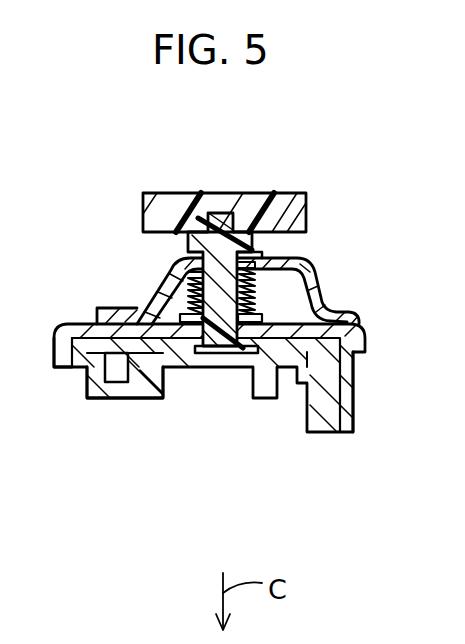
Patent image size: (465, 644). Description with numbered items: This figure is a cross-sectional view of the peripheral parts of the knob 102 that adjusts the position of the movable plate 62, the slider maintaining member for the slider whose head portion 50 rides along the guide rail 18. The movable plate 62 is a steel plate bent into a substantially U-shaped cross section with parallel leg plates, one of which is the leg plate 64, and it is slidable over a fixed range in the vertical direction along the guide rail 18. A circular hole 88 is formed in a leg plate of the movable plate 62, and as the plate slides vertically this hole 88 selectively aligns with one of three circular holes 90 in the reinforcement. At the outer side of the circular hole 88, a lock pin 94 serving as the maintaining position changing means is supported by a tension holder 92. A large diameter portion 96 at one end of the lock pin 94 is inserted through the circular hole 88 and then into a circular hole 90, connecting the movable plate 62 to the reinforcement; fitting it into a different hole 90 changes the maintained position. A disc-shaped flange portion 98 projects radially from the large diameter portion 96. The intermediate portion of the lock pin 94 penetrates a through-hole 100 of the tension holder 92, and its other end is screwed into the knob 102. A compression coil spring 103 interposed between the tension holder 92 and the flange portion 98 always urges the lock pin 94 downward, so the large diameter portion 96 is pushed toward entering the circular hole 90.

The guide rail 18 is at (121, 398).
The head portion 50 is at (67, 378).
The movable plate 62 is at (357, 412).
The leg plate 64 is at (355, 377).
The circular hole 88 is at (217, 352).
The circular hole 90 is at (238, 356).
The tension holder 92 is at (331, 303).
The lock pin 94 is at (175, 243).
The large diameter portion 96 is at (206, 368).
The flange portion 98 is at (288, 352).
The through-hole 100 is at (245, 256).
The knob 102 is at (292, 193).
The compression coil spring 103 is at (166, 286).